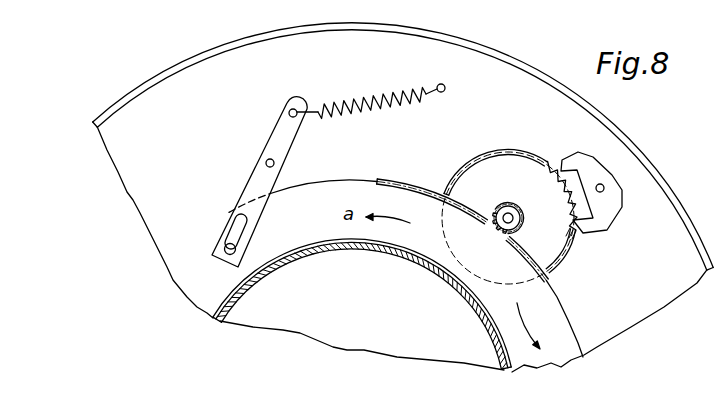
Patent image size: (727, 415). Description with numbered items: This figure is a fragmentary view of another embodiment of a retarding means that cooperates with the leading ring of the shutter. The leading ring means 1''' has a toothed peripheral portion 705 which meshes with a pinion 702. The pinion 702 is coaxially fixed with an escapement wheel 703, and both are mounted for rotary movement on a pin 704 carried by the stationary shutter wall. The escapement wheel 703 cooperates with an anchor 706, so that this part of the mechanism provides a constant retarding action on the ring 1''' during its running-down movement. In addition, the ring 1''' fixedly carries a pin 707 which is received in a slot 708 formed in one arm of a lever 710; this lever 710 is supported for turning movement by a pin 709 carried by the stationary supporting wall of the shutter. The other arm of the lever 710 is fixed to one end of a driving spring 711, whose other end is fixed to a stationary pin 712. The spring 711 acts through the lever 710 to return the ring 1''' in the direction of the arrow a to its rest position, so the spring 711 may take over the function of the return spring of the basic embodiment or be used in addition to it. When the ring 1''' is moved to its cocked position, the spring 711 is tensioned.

The leading ring means 1''' is at (398, 260).
The pinion 702 is at (503, 206).
The escapement wheel 703 is at (517, 149).
The pin 704 is at (506, 215).
The toothed peripheral portion 705 is at (417, 184).
The anchor 706 is at (596, 172).
The pin 707 is at (224, 247).
The slot 708 is at (247, 232).
The pin 709 is at (266, 161).
The lever 710 is at (277, 135).
The driving spring 711 is at (367, 89).
The stationary pin 712 is at (445, 85).